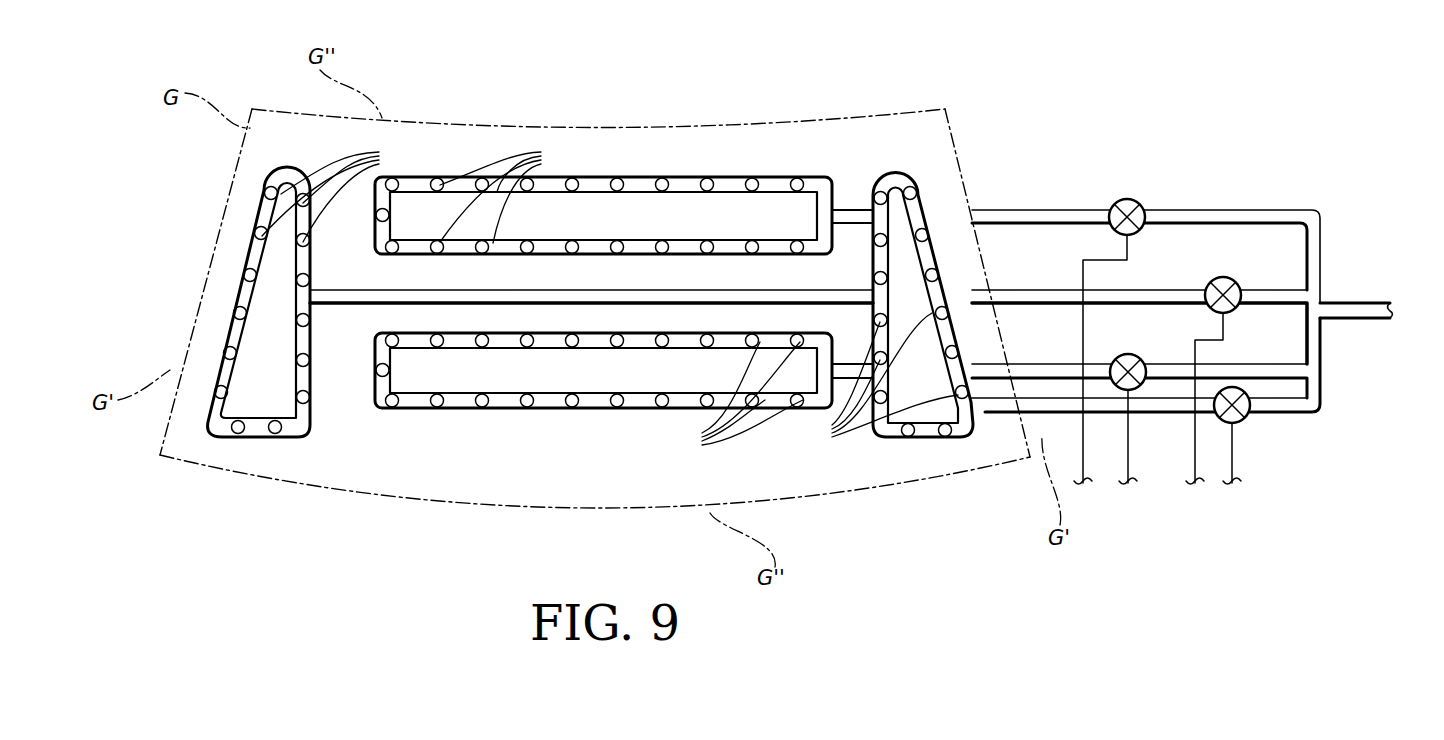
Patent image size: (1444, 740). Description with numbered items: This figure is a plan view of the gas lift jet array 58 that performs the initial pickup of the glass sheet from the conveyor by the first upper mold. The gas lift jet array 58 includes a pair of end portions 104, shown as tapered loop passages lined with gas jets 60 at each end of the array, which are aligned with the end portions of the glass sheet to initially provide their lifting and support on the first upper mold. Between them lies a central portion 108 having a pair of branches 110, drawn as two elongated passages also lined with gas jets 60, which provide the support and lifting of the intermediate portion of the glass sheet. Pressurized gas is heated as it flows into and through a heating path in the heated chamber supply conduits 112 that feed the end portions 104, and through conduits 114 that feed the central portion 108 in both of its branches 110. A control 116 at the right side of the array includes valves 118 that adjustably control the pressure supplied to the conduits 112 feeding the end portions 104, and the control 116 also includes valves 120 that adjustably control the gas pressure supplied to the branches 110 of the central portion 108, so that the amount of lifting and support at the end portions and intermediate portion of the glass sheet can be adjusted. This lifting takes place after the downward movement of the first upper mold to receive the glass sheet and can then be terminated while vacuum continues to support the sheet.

The gas lift jet array 58 is at (341, 443).
The fibers 60 is at (610, 302).
The end portions 104 is at (285, 228).
The central portion 108 is at (603, 179).
The branches 110 is at (592, 333).
The conduits 112 is at (1268, 292).
The conduits 114 is at (1200, 207).
The control 116 is at (1251, 368).
The valves 118 is at (1225, 276).
The valves 120 is at (1127, 197).